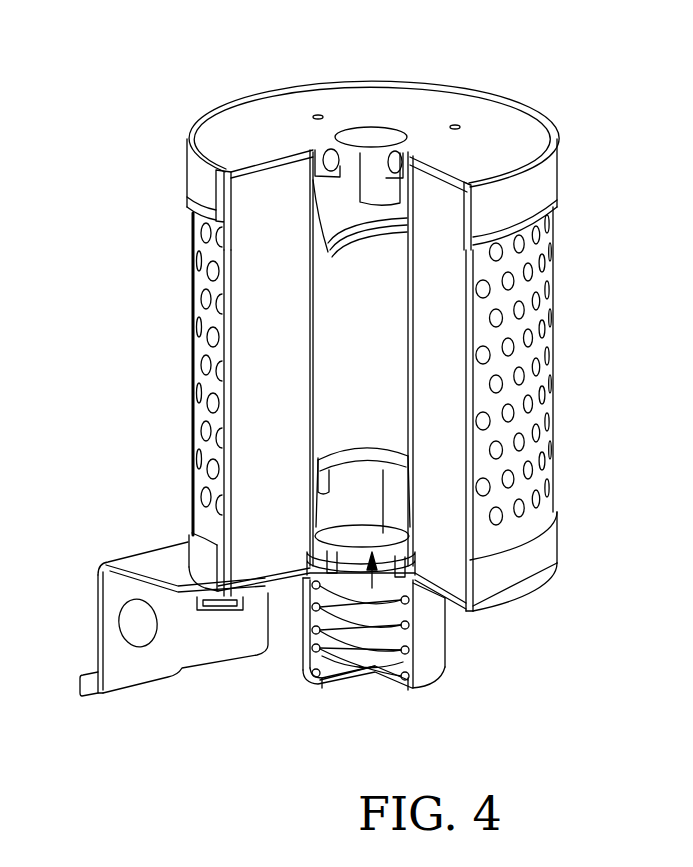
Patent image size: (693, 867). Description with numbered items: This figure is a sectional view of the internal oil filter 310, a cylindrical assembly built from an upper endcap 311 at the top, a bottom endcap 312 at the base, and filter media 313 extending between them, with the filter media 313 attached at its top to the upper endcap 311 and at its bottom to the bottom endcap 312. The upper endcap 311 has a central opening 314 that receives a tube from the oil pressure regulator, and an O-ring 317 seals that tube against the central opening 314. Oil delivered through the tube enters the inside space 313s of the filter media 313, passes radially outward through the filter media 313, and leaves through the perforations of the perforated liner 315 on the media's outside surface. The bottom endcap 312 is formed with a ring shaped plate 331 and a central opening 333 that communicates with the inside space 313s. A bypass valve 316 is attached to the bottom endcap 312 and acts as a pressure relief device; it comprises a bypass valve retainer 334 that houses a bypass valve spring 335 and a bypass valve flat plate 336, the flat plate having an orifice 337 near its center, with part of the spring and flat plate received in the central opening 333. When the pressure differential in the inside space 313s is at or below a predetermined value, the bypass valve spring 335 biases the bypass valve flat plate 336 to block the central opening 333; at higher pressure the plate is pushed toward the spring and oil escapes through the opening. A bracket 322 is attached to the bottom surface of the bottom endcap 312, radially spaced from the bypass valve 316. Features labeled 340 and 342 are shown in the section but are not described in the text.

The internal oil filter 310 is at (505, 68).
The upper endcap 311 is at (247, 117).
The bottom endcap 312 is at (520, 563).
The filter media 313 is at (263, 348).
The inside space 313s is at (370, 357).
The central opening 314 is at (378, 156).
The perforated liner 315 is at (547, 246).
The bypass valve 316 is at (303, 640).
The O-ring 317 is at (333, 157).
The bracket 322 is at (120, 598).
The ring shaped plate 331 is at (506, 600).
The central opening 333 is at (415, 673).
The bypass valve retainer 334 is at (433, 672).
The bypass valve spring 335 is at (355, 657).
The bypass valve flat plate 336 is at (313, 680).
The orifice 337 is at (376, 586).
The cap recess 340 is at (322, 206).
The valve guide 342 is at (337, 507).